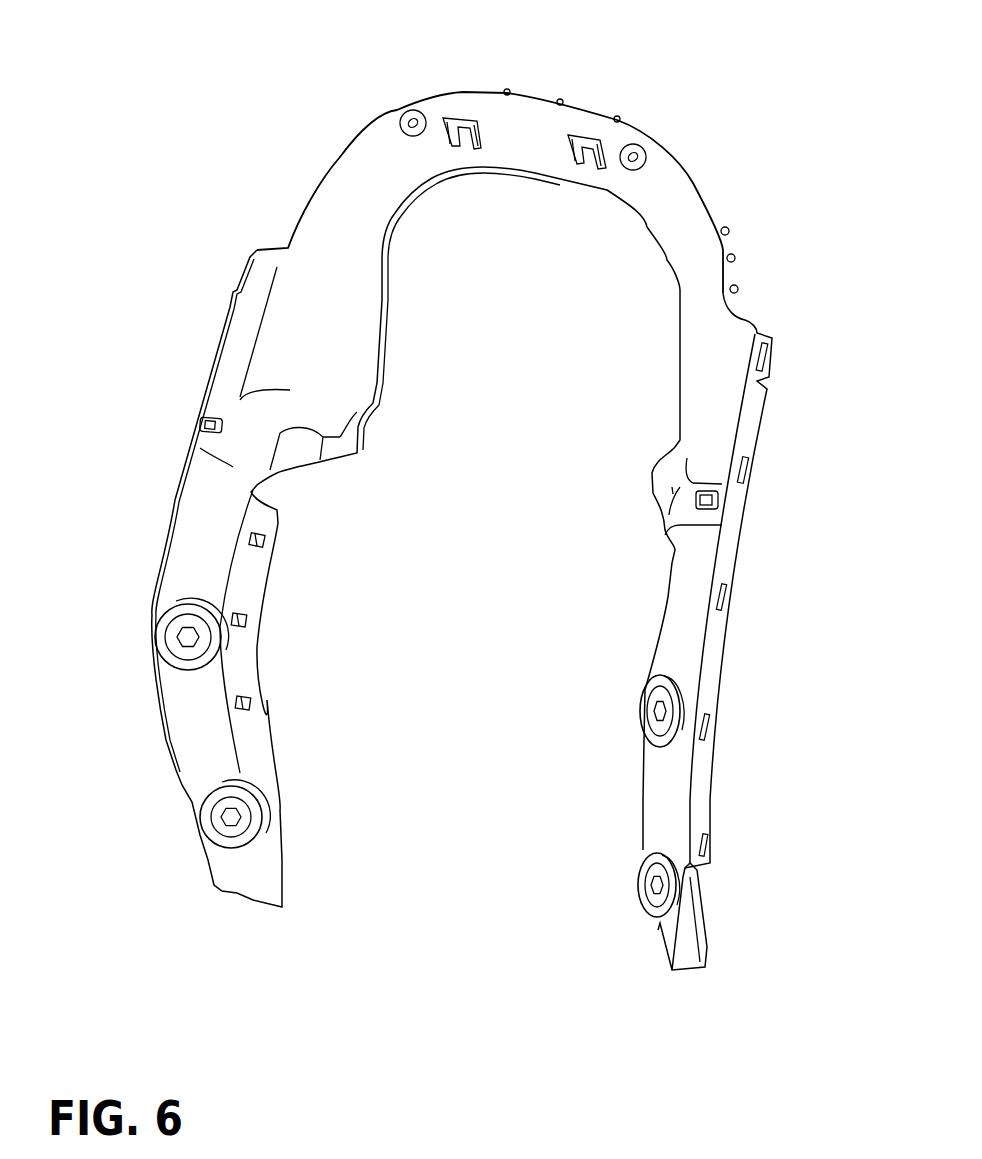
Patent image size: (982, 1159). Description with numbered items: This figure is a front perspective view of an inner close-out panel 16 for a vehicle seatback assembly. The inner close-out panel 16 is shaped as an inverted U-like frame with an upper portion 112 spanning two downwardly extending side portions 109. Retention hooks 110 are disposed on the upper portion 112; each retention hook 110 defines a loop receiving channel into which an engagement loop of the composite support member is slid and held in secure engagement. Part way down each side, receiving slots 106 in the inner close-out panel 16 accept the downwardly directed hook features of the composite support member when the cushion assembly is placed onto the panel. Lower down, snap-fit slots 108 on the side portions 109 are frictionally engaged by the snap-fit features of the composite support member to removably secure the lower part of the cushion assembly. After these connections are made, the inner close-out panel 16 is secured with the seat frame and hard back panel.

The inner close-out panel 16 is at (768, 163).
The receiving slots 106 is at (203, 422).
The snap-fit slots 108 is at (180, 637).
The side portions 109 is at (203, 718).
The retention hooks 110 is at (455, 118).
The upper portion 112 is at (347, 140).